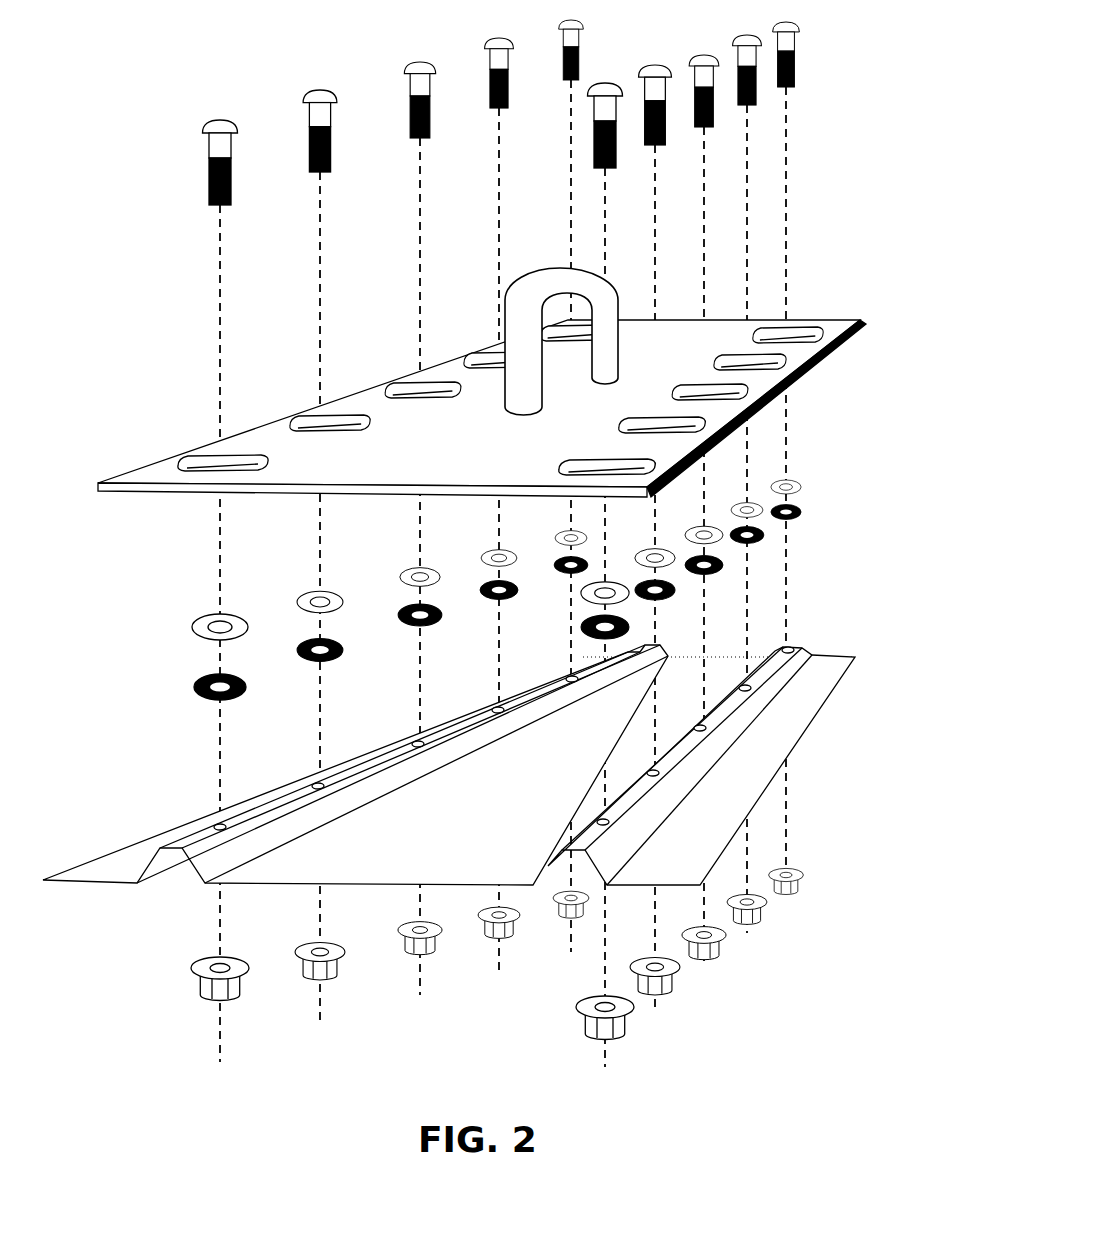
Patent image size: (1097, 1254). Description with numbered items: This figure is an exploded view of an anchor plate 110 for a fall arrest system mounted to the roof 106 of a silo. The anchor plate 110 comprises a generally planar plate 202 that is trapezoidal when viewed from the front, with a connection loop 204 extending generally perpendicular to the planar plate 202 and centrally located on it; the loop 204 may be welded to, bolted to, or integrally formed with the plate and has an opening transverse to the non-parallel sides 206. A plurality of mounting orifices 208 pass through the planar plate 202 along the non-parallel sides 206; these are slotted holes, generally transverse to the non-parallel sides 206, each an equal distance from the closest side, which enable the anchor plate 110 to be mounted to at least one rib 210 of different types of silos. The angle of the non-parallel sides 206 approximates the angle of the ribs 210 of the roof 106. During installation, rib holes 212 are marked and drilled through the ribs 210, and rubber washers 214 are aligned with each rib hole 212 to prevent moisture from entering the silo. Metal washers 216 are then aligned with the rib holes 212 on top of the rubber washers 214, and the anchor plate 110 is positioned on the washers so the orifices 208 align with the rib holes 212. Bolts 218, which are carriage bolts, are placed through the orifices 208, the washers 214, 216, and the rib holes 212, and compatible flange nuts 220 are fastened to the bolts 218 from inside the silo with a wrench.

The roof 106 is at (471, 765).
The anchor plate 110 is at (509, 418).
The planar plate 202 is at (280, 445).
The connection loop 204 is at (598, 296).
The non-parallel sides 206 is at (303, 412).
The mounting orifices 208 is at (215, 468).
The rib 210 is at (705, 756).
The rib holes 212 is at (785, 655).
The rubber washers 214 is at (800, 511).
The metal washers 216 is at (800, 484).
The bolts 218 is at (798, 78).
The nuts 220 is at (792, 878).